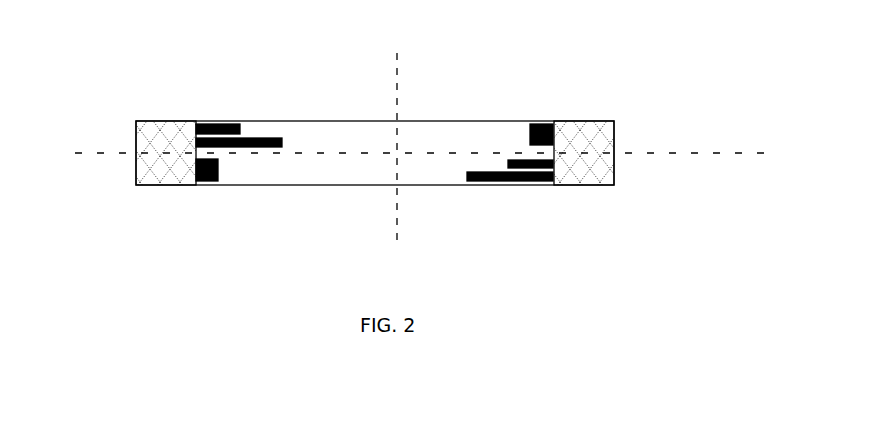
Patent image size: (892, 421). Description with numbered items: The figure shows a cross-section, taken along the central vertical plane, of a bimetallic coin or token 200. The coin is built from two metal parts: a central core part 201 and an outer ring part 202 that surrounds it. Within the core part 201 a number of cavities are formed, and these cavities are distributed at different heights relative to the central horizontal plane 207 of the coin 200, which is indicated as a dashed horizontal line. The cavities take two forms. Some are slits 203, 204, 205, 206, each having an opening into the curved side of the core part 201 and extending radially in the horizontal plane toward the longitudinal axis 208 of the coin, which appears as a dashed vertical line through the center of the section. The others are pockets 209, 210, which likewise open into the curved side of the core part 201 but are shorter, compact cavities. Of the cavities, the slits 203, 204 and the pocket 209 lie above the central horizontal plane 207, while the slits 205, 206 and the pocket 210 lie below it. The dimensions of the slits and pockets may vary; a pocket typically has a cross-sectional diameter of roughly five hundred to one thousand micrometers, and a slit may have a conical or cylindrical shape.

The bimetallic coin or token 200 is at (236, 70).
The core part 201 is at (413, 137).
The ring part 202 is at (590, 138).
The slit 203 is at (240, 124).
The slit 204 is at (282, 138).
The slit 205 is at (556, 162).
The slit 206 is at (490, 178).
The central horizontal plane 207 is at (400, 156).
The longitudinal axis 208 is at (396, 138).
The pocket 209 is at (543, 124).
The pocket 210 is at (215, 181).